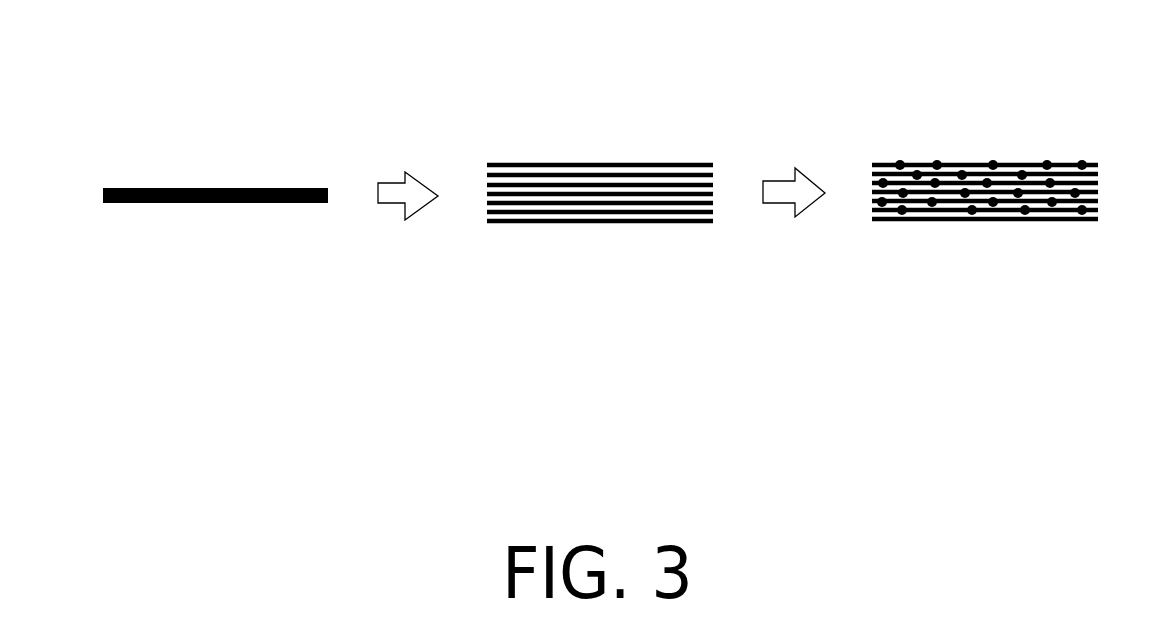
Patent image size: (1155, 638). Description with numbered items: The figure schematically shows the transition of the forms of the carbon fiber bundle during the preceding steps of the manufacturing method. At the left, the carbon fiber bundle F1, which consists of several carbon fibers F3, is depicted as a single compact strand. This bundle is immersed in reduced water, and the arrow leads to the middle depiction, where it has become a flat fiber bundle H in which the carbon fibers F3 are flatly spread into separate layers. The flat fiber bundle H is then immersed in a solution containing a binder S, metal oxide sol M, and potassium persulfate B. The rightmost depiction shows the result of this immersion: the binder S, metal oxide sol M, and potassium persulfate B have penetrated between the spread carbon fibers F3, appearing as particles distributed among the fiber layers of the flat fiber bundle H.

The carbon fiber bundle F1 is at (227, 163).
The carbon fibers F3 is at (542, 222).
The flat fiber bundle H is at (612, 142).
The metal oxide sol M is at (883, 167).
The binder S is at (1018, 178).
The potassium persulfate B is at (918, 218).